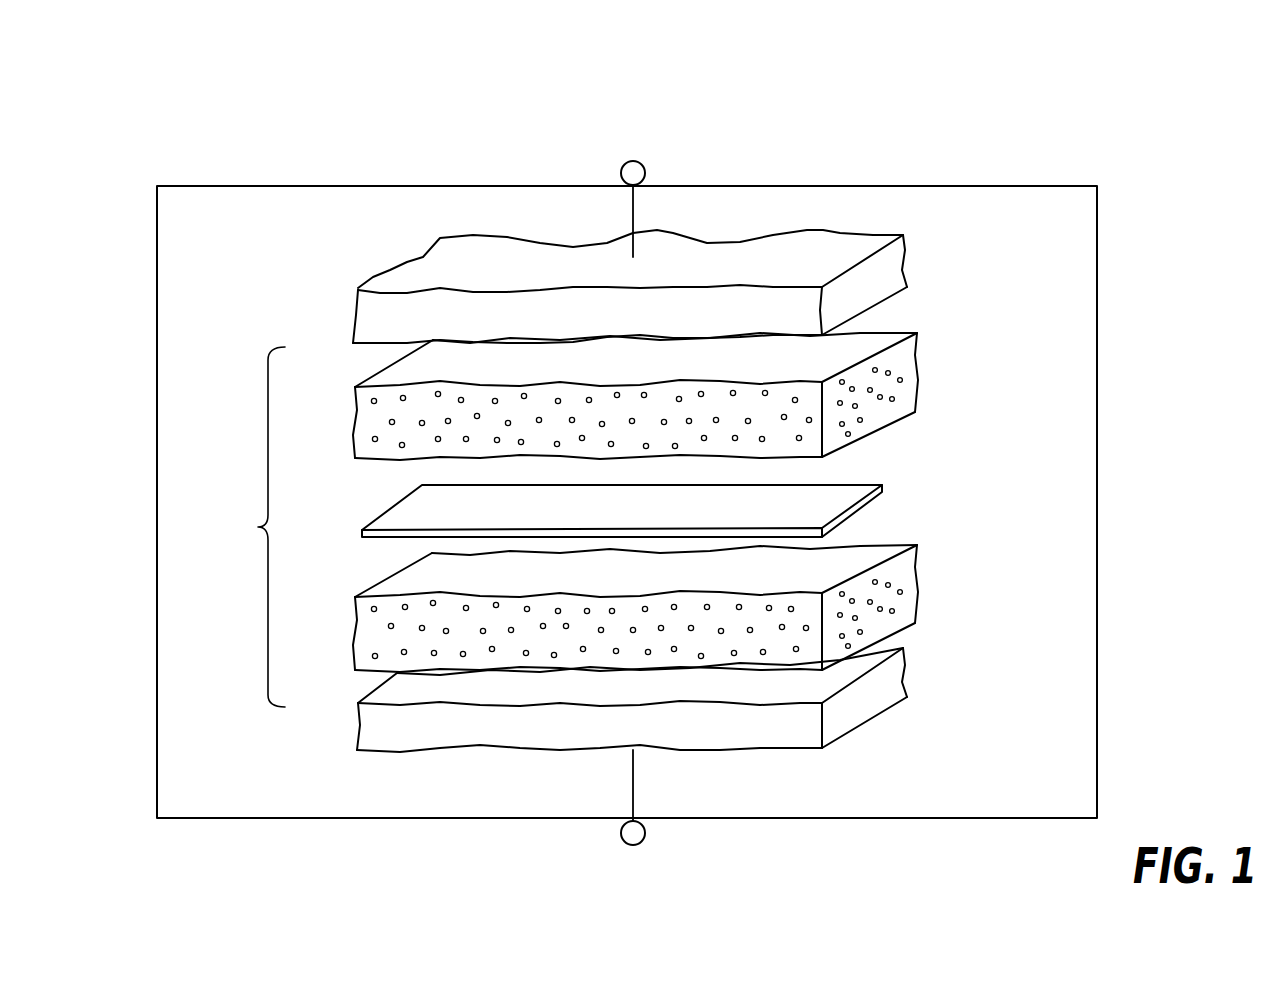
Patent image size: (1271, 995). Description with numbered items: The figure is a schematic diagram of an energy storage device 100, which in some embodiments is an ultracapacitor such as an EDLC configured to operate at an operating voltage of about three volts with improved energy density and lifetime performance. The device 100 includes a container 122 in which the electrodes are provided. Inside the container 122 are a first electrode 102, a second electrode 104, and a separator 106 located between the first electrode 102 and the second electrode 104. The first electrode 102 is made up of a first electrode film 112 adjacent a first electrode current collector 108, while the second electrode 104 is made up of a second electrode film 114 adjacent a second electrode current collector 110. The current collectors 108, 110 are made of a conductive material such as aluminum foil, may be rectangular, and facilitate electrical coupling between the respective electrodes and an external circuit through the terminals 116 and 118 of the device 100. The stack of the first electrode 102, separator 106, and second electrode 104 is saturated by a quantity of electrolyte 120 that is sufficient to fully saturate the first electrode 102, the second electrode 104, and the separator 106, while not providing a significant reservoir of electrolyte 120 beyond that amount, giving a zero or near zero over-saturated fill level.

The energy storage device 100 is at (782, 64).
The first electrode 102 is at (680, 324).
The second electrode 104 is at (687, 669).
The separator 106 is at (843, 492).
The first electrode current collector 108 is at (812, 237).
The second electrode current collector 110 is at (778, 737).
The first electrode film 112 is at (907, 380).
The second electrode film 114 is at (903, 590).
The terminal 116 is at (637, 167).
The terminal 118 is at (640, 833).
The electrolyte 120 is at (250, 527).
The container 122 is at (157, 652).